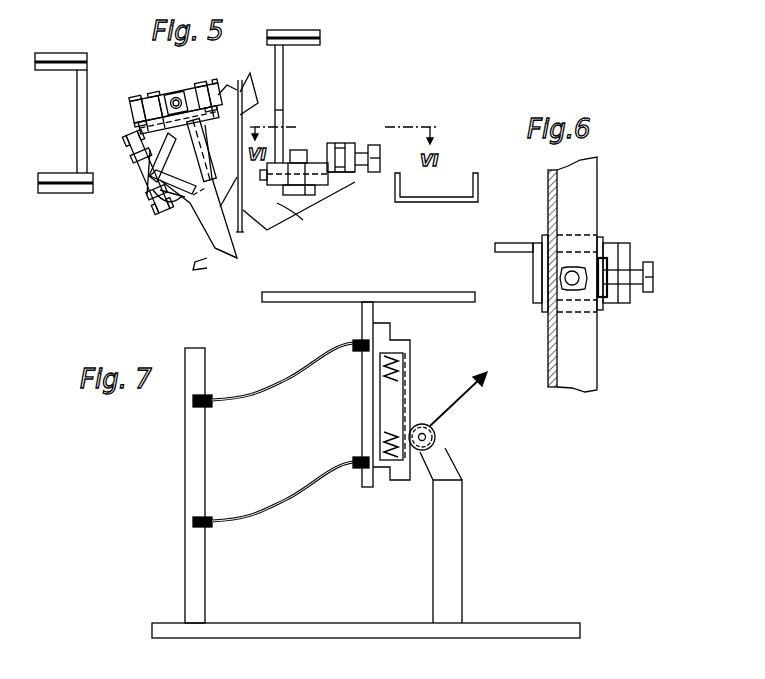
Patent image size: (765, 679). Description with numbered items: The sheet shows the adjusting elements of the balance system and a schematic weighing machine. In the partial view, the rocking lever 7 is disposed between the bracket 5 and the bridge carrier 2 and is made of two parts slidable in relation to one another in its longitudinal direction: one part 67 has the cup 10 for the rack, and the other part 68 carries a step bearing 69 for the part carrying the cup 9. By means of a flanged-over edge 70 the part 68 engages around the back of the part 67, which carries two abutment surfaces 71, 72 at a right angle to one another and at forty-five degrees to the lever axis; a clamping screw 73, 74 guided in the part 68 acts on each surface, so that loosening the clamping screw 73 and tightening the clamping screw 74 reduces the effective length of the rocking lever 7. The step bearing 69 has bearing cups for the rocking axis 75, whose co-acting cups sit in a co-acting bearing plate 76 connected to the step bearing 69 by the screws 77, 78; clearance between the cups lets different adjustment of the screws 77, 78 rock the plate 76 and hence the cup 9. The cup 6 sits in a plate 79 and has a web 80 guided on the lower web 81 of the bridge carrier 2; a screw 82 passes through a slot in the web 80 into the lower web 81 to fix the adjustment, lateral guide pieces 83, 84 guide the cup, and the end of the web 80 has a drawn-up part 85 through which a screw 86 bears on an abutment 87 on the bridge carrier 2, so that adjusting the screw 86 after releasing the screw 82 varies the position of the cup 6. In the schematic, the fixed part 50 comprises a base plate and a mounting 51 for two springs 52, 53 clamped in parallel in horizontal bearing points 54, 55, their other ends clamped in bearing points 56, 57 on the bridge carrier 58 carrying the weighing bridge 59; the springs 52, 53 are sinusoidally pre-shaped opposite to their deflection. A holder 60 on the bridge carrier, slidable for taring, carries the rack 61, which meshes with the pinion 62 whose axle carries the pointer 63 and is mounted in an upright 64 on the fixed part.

In FIG. 5, the bridge carrier 2 is at (284, 106).
In FIG. 6, the bridge carrier 2 is at (555, 218).
In FIG. 5, the bracket 5 is at (77, 112).
In FIG. 5, the cup 6 is at (246, 232).
In FIG. 6, the cup 6 is at (527, 254).
In FIG. 5, the rocking lever 7 is at (206, 207).
In FIG. 5, the cup 9 is at (252, 90).
In FIG. 5, the cup for the rack 10 is at (237, 250).
In FIG. 7, the fixed part of the weighing machine 50 is at (228, 630).
In FIG. 7, the mounting 51 is at (195, 468).
In FIG. 7, the spring 52 is at (276, 374).
In FIG. 7, the spring 53 is at (282, 496).
In FIG. 7, the bearing point 54 is at (198, 406).
In FIG. 7, the bearing point 55 is at (198, 524).
In FIG. 7, the bearing point 56 is at (352, 344).
In FIG. 7, the bearing point 57 is at (358, 466).
In FIG. 7, the bridge carrier 58 is at (362, 317).
In FIG. 7, the weighing bridge 59 is at (366, 292).
In FIG. 7, the holder 60 is at (404, 344).
In FIG. 7, the rack 61 is at (410, 380).
In FIG. 7, the pinion 62 is at (436, 438).
In FIG. 7, the pointer 63 is at (458, 408).
In FIG. 7, the upright 64 is at (458, 514).
In FIG. 5, the part of the rocking lever 67 is at (203, 270).
In FIG. 5, the part of the rocking lever 68 is at (147, 200).
In FIG. 5, the step bearing 69 is at (135, 120).
In FIG. 5, the flanged-over edge 70 is at (210, 143).
In FIG. 5, the abutment surface 71 is at (174, 196).
In FIG. 5, the abutment surface 72 is at (150, 192).
In FIG. 5, the clamping screw 73 is at (140, 166).
In FIG. 5, the clamping screw 74 is at (152, 205).
In FIG. 5, the rocking axis 75 is at (178, 92).
In FIG. 5, the co-acting bearing plate 76 is at (170, 96).
In FIG. 5, the screw 77 is at (138, 96).
In FIG. 5, the screw 78 is at (210, 86).
In FIG. 5, the plate 79 is at (287, 212).
In FIG. 5, the web 80 is at (352, 178).
In FIG. 5, the lower web 81 is at (283, 163).
In FIG. 5, the screw 82 is at (303, 190).
In FIG. 6, the lateral guide piece 83 is at (600, 240).
In FIG. 6, the lateral guide piece 84 is at (600, 306).
In FIG. 6, the drawn-up part 85 is at (622, 252).
In FIG. 6, the screw 86 is at (610, 298).
In FIG. 5, the abutment 87 is at (333, 143).
In FIG. 6, the abutment 87 is at (650, 294).